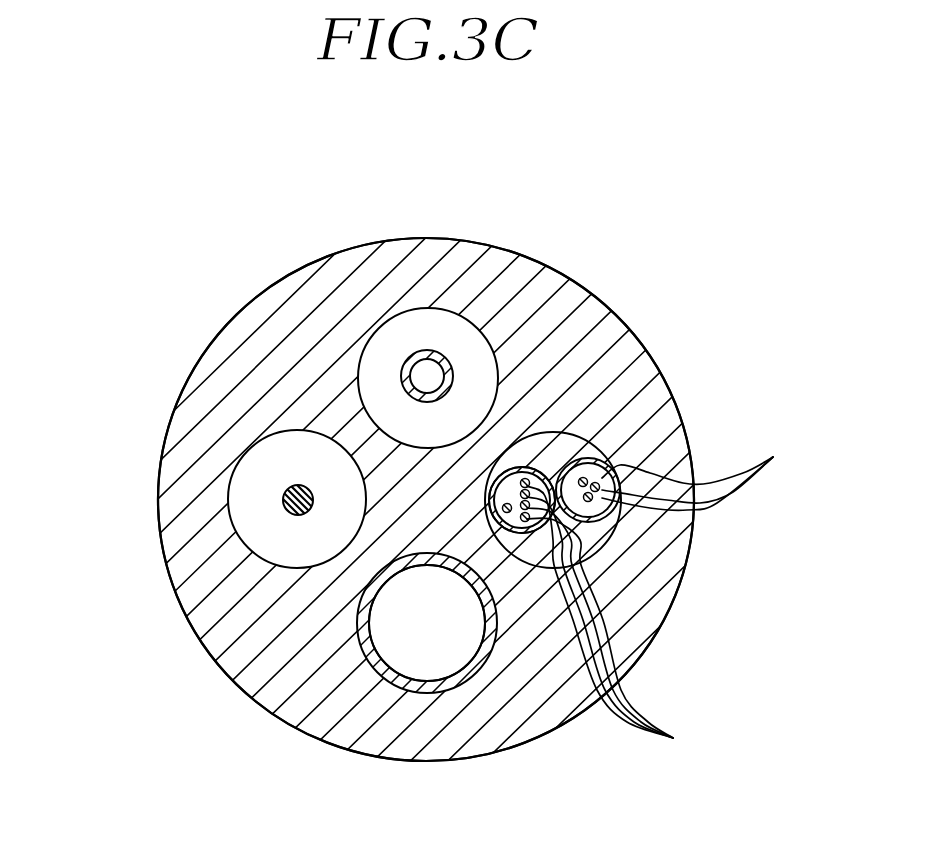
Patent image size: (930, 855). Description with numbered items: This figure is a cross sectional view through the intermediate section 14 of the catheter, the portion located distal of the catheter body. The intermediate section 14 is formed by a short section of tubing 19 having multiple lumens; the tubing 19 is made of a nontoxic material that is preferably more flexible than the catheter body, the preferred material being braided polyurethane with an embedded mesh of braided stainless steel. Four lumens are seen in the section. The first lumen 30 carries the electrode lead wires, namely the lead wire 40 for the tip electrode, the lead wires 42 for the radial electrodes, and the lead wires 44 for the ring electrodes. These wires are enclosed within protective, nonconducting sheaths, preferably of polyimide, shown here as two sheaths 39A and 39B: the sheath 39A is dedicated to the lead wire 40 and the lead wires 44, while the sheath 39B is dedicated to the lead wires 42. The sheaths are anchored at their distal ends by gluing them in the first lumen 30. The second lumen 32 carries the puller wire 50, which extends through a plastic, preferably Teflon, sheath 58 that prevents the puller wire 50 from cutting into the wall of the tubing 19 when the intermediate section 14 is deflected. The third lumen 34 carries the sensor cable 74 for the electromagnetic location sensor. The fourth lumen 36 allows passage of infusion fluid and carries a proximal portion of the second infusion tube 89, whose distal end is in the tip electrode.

The intermediate section 14 is at (354, 805).
The tubing 19 is at (242, 652).
The first lumen 30 is at (620, 530).
The second lumen 32 is at (358, 373).
The third lumen 34 is at (165, 546).
The fourth lumen 36 is at (373, 673).
The sheath 39A is at (527, 480).
The sheath 39B is at (576, 460).
The lead wire 40 is at (513, 525).
The lead wires 42 is at (622, 620).
The lead wires 44 is at (704, 467).
The puller wire 50 is at (430, 368).
The sheath 58 is at (448, 361).
The sensor cable 74 is at (285, 490).
The second infusion tube 89 is at (447, 684).